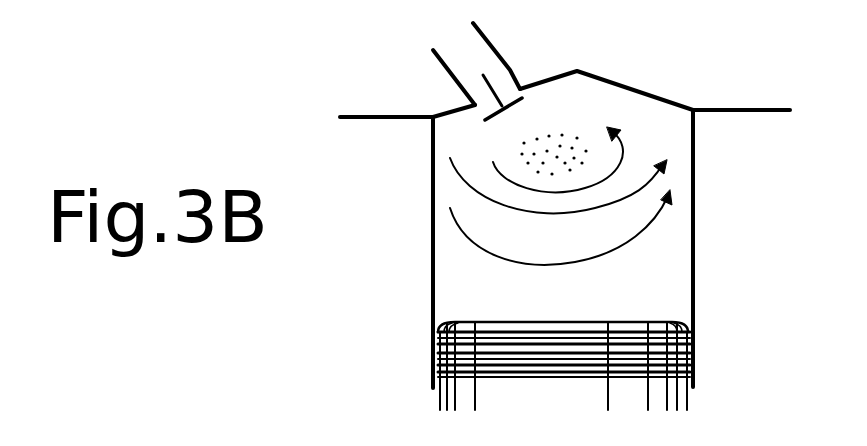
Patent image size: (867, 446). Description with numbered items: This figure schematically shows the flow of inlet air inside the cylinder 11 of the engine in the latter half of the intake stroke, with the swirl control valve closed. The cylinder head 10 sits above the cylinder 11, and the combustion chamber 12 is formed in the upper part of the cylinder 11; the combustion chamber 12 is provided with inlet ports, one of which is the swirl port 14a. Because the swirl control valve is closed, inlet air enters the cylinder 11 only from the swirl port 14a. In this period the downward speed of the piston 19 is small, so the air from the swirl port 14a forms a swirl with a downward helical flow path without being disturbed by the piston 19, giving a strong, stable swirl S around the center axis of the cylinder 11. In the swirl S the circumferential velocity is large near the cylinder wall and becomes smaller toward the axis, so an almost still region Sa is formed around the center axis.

The cylinder head 10 is at (770, 86).
The cylinder 11 is at (693, 273).
The combustion chamber 12 is at (591, 81).
The swirl port 14a is at (505, 70).
The piston 19 is at (693, 380).
The swirl S is at (655, 181).
The almost still region Sa is at (570, 132).